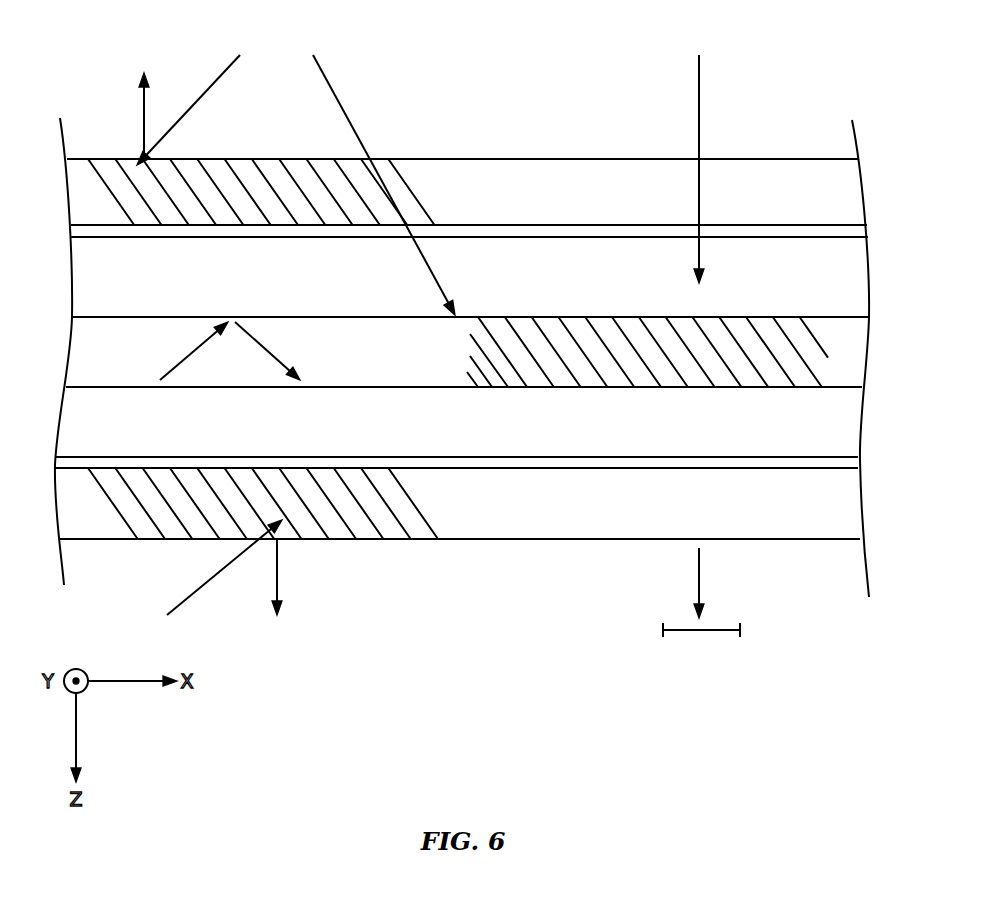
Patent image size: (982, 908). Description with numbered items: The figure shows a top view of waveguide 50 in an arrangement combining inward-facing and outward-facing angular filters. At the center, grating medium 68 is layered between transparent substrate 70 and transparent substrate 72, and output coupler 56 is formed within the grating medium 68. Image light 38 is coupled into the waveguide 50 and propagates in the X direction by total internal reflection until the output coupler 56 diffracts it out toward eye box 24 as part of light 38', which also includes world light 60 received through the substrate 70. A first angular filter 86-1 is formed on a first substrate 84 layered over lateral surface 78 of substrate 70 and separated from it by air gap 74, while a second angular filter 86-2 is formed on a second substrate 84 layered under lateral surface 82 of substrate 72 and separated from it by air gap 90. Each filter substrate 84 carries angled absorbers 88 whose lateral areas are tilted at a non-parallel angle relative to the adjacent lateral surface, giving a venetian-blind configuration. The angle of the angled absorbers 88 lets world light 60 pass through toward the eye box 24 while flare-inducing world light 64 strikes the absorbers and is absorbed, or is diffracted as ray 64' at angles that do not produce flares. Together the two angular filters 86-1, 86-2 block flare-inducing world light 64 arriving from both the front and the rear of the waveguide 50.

The eye box 24 is at (700, 632).
The image light 38 is at (239, 351).
The light 38' is at (733, 583).
The waveguide 50 is at (872, 555).
The output coupler 56 is at (828, 315).
The world light 60 is at (326, 78).
The flare-inducing world light 64 is at (213, 335).
The diffracted ray 64' is at (243, 335).
The grating medium 68 is at (76, 354).
The substrate 70 is at (80, 278).
The substrate 72 is at (66, 426).
The air gap 74 is at (80, 232).
The lateral surface 78 is at (156, 250).
The lateral surface 82 is at (118, 450).
The substrate 84 is at (80, 195).
The first angular filter 86-1 is at (89, 123).
The second angular filter 86-2 is at (108, 559).
The angled absorbers 88 is at (290, 162).
The air gap 90 is at (64, 466).